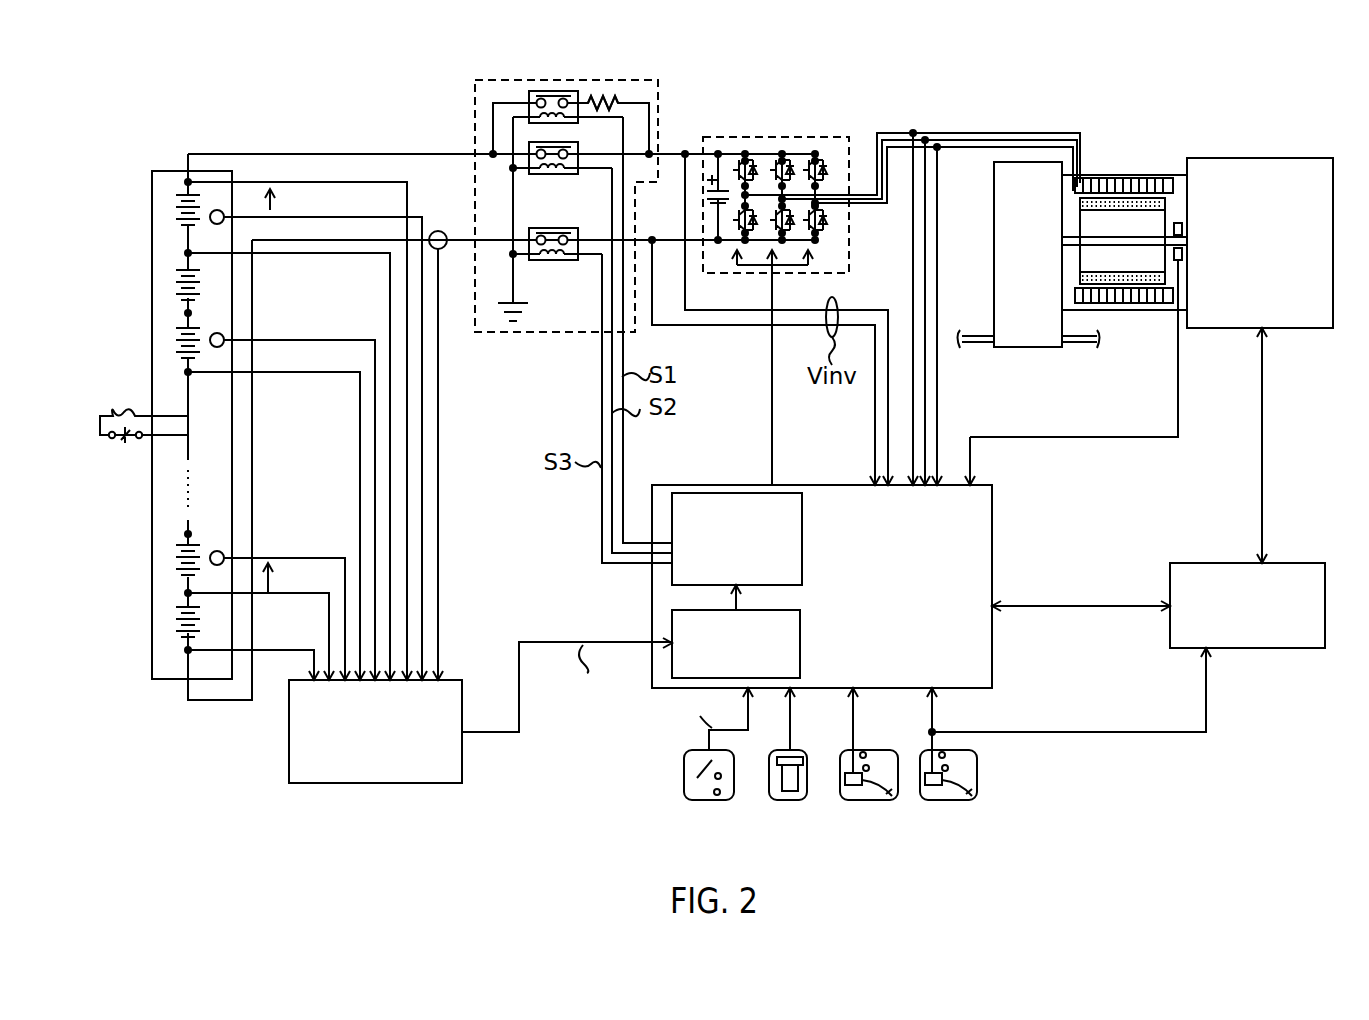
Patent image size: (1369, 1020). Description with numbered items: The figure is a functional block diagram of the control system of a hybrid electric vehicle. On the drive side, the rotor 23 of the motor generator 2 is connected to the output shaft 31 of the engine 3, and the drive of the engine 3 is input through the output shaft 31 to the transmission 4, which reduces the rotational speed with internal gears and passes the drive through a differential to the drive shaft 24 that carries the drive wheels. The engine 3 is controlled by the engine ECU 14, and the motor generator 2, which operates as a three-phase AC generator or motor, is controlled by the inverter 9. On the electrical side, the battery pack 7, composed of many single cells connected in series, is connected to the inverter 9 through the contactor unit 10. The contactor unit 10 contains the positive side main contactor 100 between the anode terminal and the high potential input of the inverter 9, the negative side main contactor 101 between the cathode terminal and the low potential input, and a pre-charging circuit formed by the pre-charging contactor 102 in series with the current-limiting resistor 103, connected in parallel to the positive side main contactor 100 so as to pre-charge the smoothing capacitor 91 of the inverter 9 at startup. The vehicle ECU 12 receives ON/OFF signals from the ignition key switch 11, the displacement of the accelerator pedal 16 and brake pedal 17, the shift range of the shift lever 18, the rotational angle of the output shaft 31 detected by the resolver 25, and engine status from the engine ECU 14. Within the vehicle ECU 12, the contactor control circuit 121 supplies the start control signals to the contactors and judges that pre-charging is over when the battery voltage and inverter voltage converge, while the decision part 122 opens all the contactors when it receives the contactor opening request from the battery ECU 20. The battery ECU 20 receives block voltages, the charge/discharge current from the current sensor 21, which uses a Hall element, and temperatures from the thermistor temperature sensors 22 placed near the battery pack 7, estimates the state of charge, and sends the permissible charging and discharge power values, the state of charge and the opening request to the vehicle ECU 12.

The motor generator 2 is at (1100, 260).
The engine 3 is at (1305, 160).
The transmission 4 is at (1035, 168).
The battery pack 7 is at (178, 170).
The inverter 9 is at (748, 178).
The contactor unit 10 is at (566, 181).
The ignition key switch 11 is at (708, 803).
The vehicle ECU 12 is at (852, 562).
The engine ECU 14 is at (1297, 572).
The accelerator pedal 16 is at (947, 803).
The brake pedal 17 is at (870, 803).
The shift lever 18 is at (790, 803).
The battery ECU 20 is at (363, 783).
The current sensor 21 is at (440, 230).
The temperature sensor 22 is at (217, 209).
The rotor 23 is at (1143, 218).
The drive shaft 24 is at (972, 333).
The resolver 25 is at (1178, 225).
The output shaft 31 is at (1188, 244).
The smoothing capacitor 91 is at (722, 190).
The positive side main contactor 100 is at (554, 176).
The negative side main contactor 101 is at (554, 262).
The pre-charging contactor 102 is at (566, 76).
The current-limiting resistor 103 is at (606, 100).
The contactor control circuit 121 is at (712, 493).
The decision part 122 is at (800, 637).